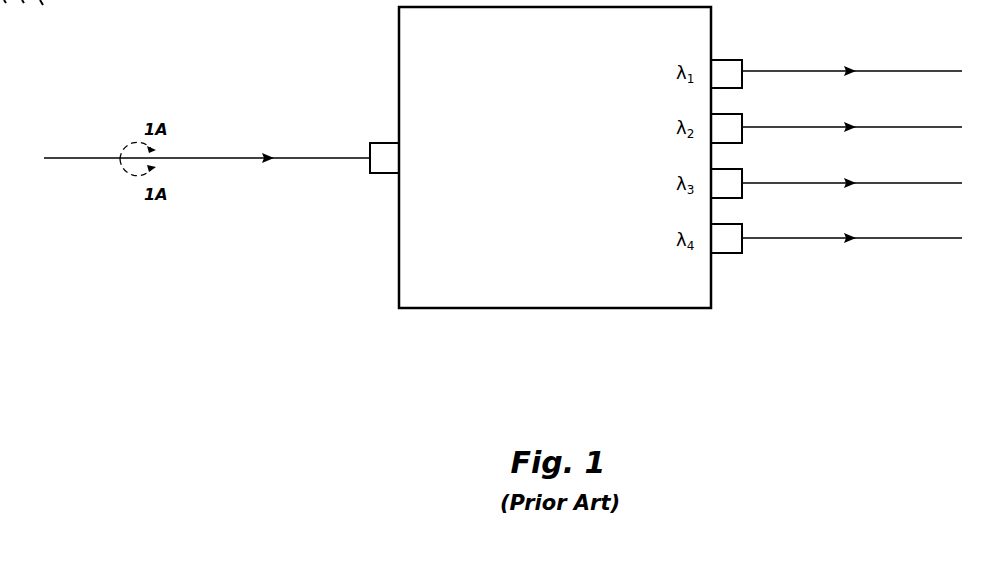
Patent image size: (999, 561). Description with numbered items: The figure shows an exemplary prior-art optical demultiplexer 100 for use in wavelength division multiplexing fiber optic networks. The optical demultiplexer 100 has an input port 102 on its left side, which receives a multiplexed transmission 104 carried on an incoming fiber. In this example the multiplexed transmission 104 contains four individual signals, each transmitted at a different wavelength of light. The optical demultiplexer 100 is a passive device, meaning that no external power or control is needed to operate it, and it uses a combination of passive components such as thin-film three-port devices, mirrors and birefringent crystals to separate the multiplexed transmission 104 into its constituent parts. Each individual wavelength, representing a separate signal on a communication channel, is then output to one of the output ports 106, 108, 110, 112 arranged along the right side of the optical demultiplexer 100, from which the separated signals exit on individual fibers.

The optical demultiplexer 100 is at (452, 327).
The input port 102 is at (385, 143).
The multiplexed transmission 104 is at (192, 157).
The output port 106 is at (742, 59).
The output port 108 is at (742, 113).
The output port 110 is at (742, 169).
The output port 112 is at (742, 224).